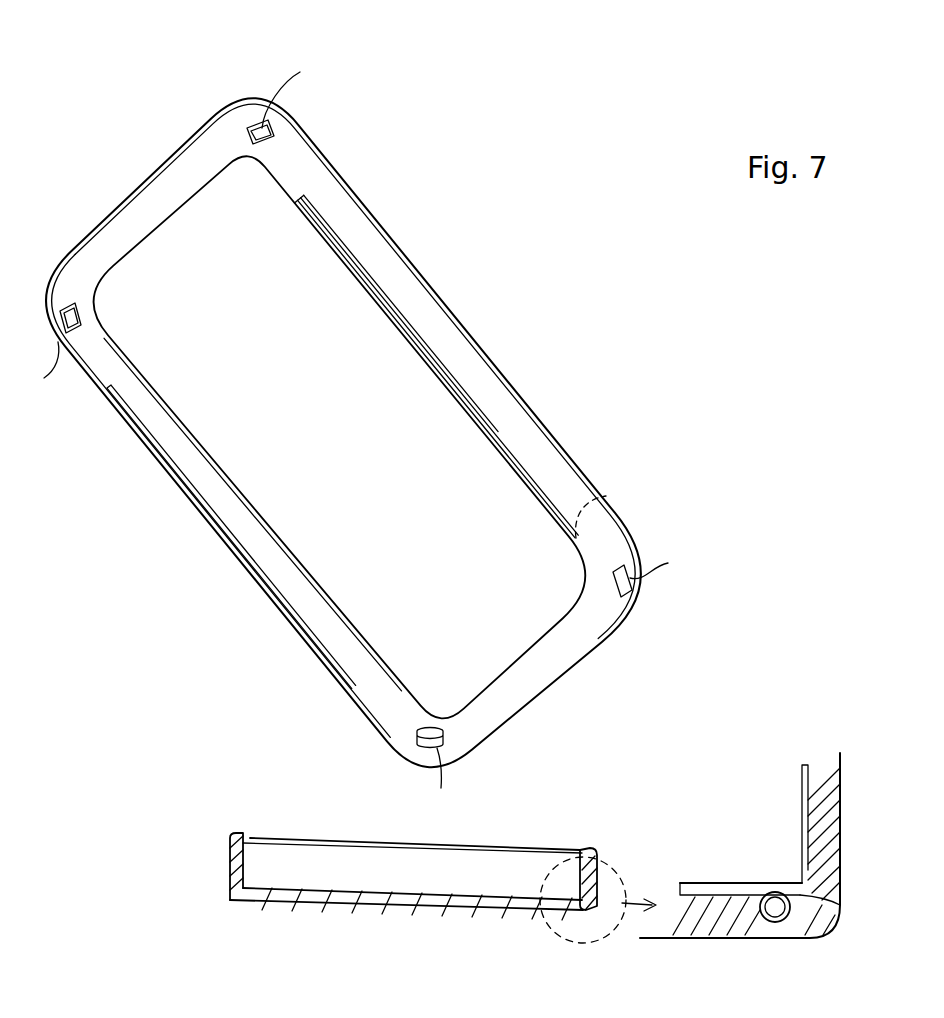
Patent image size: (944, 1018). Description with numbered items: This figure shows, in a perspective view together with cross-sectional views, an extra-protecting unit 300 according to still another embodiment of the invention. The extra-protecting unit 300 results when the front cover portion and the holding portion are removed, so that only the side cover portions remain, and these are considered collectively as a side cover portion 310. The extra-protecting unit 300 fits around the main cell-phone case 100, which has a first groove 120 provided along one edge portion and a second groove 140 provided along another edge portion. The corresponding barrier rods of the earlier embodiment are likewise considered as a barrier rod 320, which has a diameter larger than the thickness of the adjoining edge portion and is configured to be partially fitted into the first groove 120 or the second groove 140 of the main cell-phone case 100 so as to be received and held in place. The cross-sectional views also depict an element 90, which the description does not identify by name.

The extra-protecting unit 300 is at (590, 85).
The main cell-phone case 100 is at (221, 140).
The first groove 120 is at (417, 342).
The display screen panel 90 is at (430, 870).
The side cover portion 310 is at (234, 866).
The barrier rod 320 is at (768, 940).
The second groove 140 is at (752, 912).